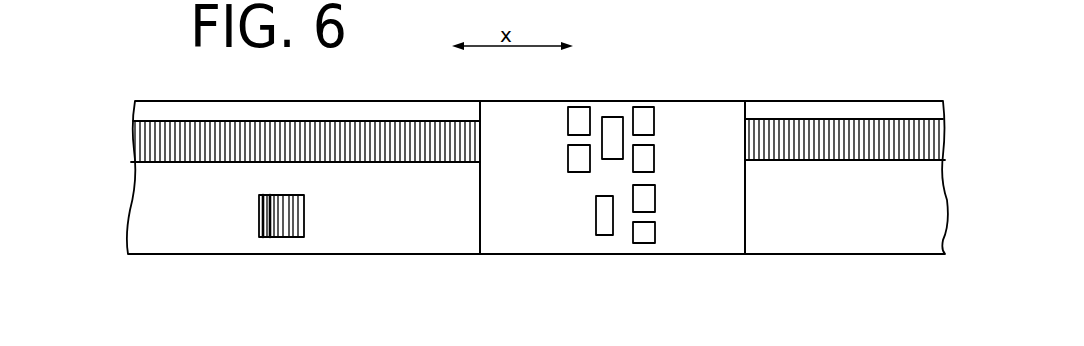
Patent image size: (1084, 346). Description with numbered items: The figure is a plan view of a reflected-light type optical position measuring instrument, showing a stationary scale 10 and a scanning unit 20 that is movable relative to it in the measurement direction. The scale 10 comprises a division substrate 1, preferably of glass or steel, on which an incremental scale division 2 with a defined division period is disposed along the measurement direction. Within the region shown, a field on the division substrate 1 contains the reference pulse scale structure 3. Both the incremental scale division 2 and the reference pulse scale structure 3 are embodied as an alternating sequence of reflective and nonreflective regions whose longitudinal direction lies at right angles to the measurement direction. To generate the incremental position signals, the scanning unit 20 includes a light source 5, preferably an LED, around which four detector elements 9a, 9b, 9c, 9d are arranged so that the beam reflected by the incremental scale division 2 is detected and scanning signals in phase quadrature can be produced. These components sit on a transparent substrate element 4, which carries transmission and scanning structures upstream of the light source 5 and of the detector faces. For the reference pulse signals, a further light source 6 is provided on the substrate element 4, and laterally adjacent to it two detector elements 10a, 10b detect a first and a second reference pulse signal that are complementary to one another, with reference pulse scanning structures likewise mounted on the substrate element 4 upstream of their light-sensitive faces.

The division substrate 1 is at (183, 237).
The incremental scale division 2 is at (253, 120).
The reference pulse scale structure 3 is at (284, 237).
The transparent substrate element 4 is at (722, 240).
The light source 5 is at (613, 125).
The light source 6 is at (604, 232).
The detector element 9a is at (578, 113).
The detector element 9b is at (571, 160).
The detector element 9c is at (643, 112).
The detector element 9d is at (651, 158).
The scale 10 is at (832, 100).
The detector element 10a is at (651, 197).
The detector element 10b is at (645, 241).
The scanning unit 20 is at (505, 254).